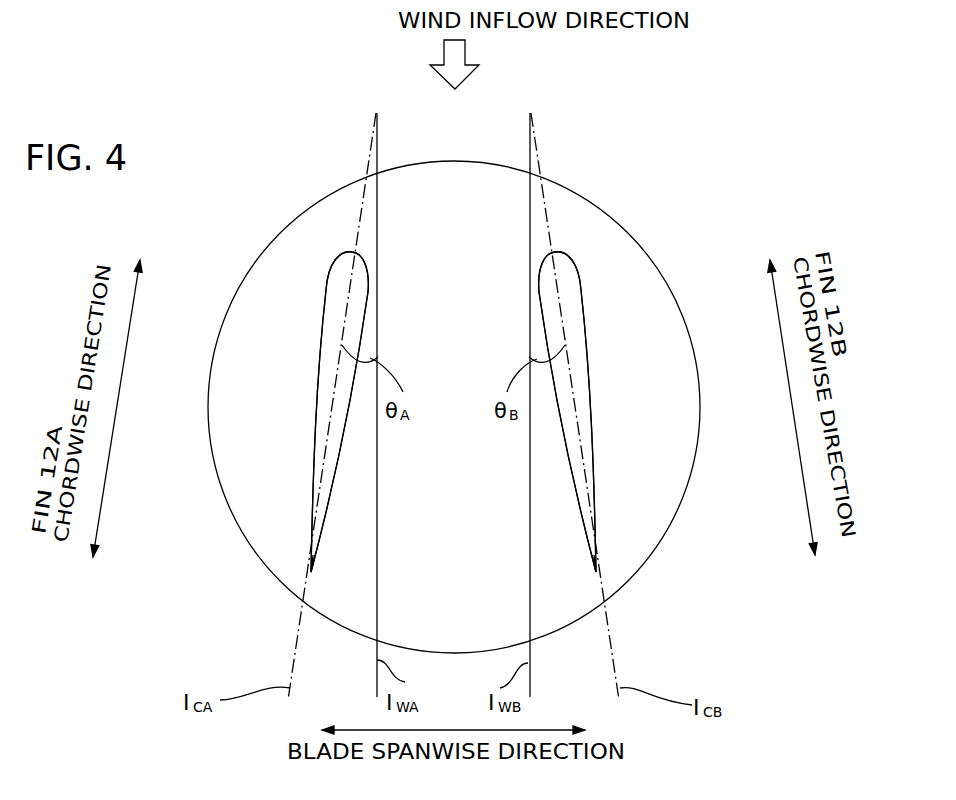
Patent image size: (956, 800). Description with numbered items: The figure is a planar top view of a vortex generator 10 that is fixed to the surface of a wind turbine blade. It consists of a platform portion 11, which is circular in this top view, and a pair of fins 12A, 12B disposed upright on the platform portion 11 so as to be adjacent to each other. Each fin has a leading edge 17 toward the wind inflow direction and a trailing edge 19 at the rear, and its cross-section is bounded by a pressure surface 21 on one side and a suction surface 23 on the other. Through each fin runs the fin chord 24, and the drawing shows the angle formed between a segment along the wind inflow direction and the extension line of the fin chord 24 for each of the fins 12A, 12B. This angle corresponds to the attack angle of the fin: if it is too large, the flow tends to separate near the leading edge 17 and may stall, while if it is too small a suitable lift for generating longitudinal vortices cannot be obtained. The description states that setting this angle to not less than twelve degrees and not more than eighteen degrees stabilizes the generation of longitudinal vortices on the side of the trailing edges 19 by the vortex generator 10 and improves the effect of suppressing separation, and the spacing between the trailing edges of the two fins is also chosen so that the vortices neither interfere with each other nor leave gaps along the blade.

The vortex generator 10 is at (667, 168).
The platform portion 11 is at (500, 197).
The fin 12A is at (327, 293).
The fin 12B is at (570, 300).
The leading edge 17 is at (355, 253).
The trailing edge 19 is at (308, 577).
The pressure surface 21 is at (297, 513).
The suction surface 23 is at (297, 513).
The fin chord 24 is at (342, 345).